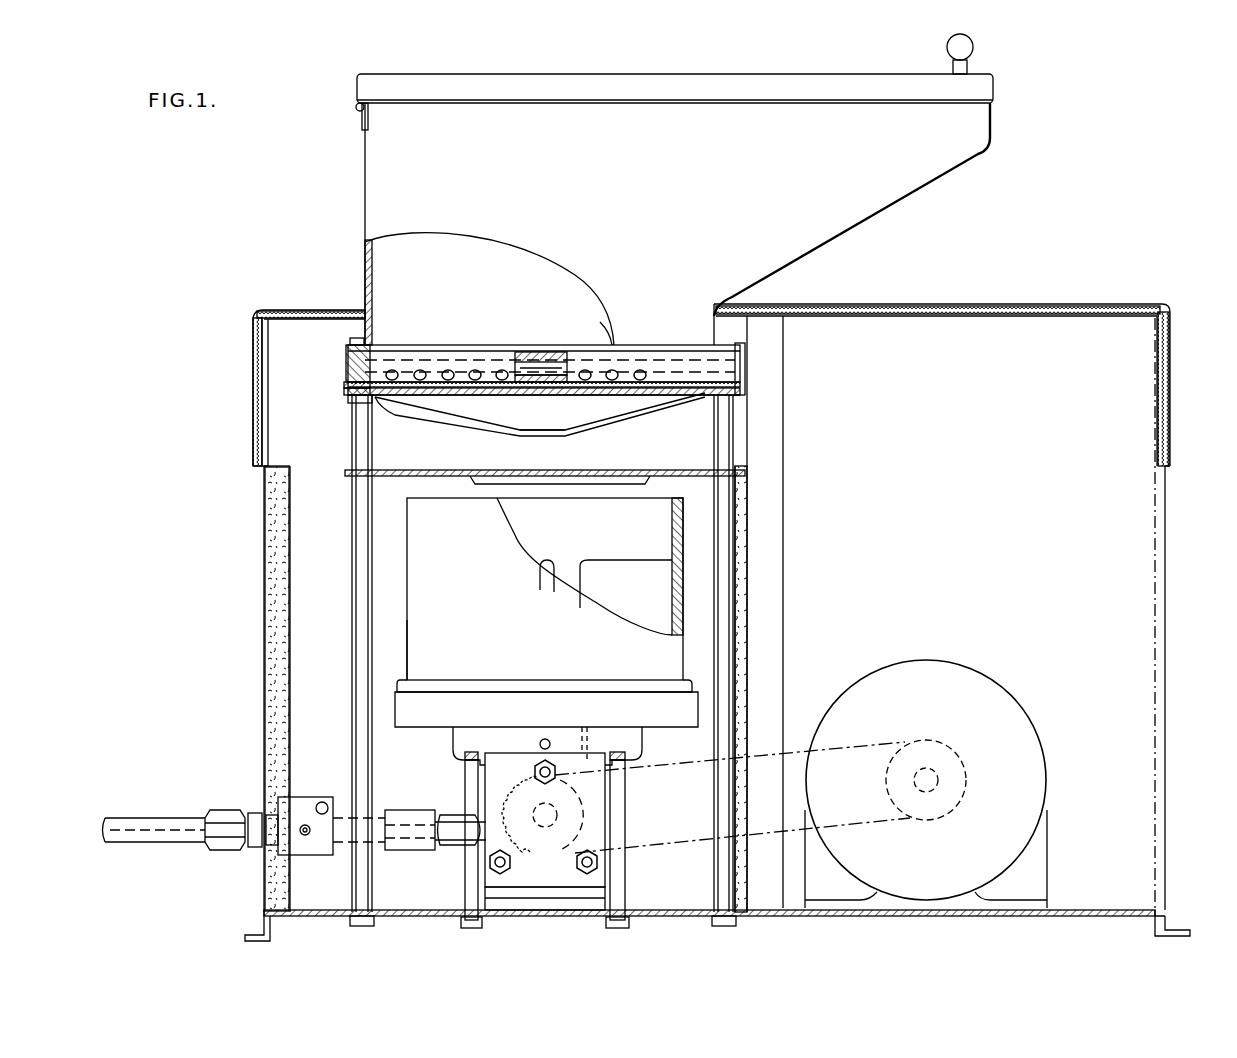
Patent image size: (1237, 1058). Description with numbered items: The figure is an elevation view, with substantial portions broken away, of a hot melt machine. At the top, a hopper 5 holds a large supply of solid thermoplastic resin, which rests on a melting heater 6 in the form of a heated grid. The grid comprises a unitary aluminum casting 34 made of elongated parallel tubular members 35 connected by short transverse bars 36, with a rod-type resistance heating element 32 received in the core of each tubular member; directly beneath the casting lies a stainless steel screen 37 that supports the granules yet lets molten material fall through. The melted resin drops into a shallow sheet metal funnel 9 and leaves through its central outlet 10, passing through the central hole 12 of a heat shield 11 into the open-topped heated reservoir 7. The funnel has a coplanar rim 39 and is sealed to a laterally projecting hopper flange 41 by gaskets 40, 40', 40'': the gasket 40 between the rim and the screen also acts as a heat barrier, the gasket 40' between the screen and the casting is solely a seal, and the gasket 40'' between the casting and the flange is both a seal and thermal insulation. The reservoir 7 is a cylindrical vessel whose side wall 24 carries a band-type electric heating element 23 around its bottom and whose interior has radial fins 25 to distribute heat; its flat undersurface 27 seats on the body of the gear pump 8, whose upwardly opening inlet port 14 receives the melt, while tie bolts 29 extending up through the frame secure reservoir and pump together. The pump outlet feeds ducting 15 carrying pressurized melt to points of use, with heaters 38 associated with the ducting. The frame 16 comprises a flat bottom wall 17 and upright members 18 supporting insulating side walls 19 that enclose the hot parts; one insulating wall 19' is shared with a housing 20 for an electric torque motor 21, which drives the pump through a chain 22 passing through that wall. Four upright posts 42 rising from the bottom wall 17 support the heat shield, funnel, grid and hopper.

The hopper 5 is at (383, 188).
The melting heater 6 is at (467, 324).
The heated reservoir 7 is at (470, 600).
The gear pump 8 is at (600, 800).
The funnel 9 is at (447, 418).
The central outlet 10 is at (543, 433).
The heat shield 11 is at (646, 472).
The central hole 12 is at (546, 476).
The inlet port 14 is at (588, 735).
The ducting 15 is at (421, 774).
The frame 16 is at (252, 582).
The bottom wall 17 is at (425, 912).
The upright members 18 is at (265, 508).
The side walls 19 is at (252, 689).
The insulating wall 19' is at (778, 614).
The housing 20 is at (1165, 560).
The electric motor 21 is at (1030, 710).
The chain 22 is at (835, 752).
The band-type electric heating element 23 is at (492, 685).
The side wall 24 is at (407, 648).
The fins 25 is at (607, 565).
The flat undersurface 27 is at (517, 735).
The tie bolts 29 is at (468, 795).
The resistance heating element 32 is at (545, 350).
The casting 34 is at (348, 372).
The tubular members 35 is at (496, 350).
The bars 36 is at (445, 370).
The screen 37 is at (560, 390).
The heaters 38 is at (305, 797).
The rim 39 is at (346, 400).
The gasket 40 is at (322, 401).
The gasket 40' is at (323, 385).
The gasket 40'' is at (323, 357).
The hopper flange 41 is at (355, 345).
The upright posts 42 is at (362, 555).